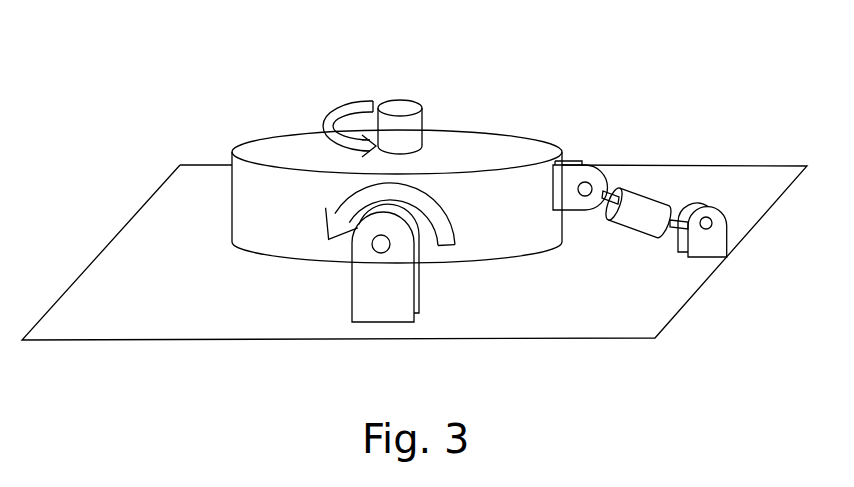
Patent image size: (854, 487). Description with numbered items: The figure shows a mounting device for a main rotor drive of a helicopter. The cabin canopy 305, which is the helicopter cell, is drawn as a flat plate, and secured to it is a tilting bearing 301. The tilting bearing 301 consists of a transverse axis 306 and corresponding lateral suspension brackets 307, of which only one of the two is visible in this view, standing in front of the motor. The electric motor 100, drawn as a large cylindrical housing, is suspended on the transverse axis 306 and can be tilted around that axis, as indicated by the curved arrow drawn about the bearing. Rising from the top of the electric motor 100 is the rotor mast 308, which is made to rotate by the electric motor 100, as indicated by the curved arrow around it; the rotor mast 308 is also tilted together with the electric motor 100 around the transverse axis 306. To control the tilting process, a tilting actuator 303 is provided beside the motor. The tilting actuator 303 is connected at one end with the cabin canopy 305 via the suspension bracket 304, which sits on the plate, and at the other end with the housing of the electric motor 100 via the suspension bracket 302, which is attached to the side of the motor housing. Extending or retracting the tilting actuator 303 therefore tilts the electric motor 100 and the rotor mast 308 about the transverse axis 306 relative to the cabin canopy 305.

The electric motor 100 is at (277, 152).
The tilting bearing 301 is at (385, 300).
The suspension bracket 302 is at (590, 162).
The tilting actuator 303 is at (647, 215).
The suspension bracket 304 is at (716, 242).
The cabin canopy 305 is at (117, 263).
The transverse axis 306 is at (362, 250).
The lateral suspension bracket 307 is at (363, 240).
The rotor mast 308 is at (400, 108).